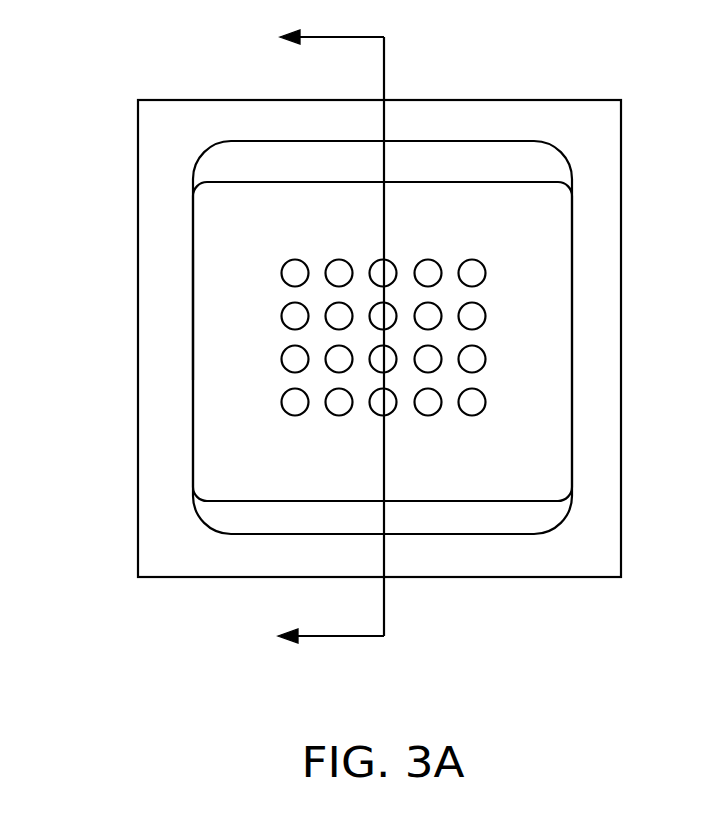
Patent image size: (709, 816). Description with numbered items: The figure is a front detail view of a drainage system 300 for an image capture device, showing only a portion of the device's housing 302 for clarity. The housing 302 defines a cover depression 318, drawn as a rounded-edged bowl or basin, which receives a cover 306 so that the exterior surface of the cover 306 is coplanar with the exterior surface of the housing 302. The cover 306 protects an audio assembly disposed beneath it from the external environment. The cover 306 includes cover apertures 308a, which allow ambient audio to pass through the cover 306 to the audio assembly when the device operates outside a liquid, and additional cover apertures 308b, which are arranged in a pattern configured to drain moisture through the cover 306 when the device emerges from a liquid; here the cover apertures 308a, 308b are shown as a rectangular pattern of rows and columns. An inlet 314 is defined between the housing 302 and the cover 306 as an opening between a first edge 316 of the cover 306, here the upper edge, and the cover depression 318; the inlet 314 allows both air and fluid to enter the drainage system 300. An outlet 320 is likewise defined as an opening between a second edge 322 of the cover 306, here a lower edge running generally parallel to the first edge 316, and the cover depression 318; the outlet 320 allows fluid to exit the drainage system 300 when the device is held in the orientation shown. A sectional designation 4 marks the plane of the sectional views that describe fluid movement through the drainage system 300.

The sectional designation 4 is at (314, 337).
The drainage system 300 is at (558, 148).
The housing 302 is at (168, 100).
The cover 306 is at (193, 312).
The cover apertures 308a is at (392, 262).
The additional cover apertures 308b is at (300, 415).
The inlet 314 is at (475, 142).
The first edge 316 is at (288, 182).
The cover depression 318 is at (212, 148).
The outlet 320 is at (472, 533).
The second edge 322 is at (297, 501).